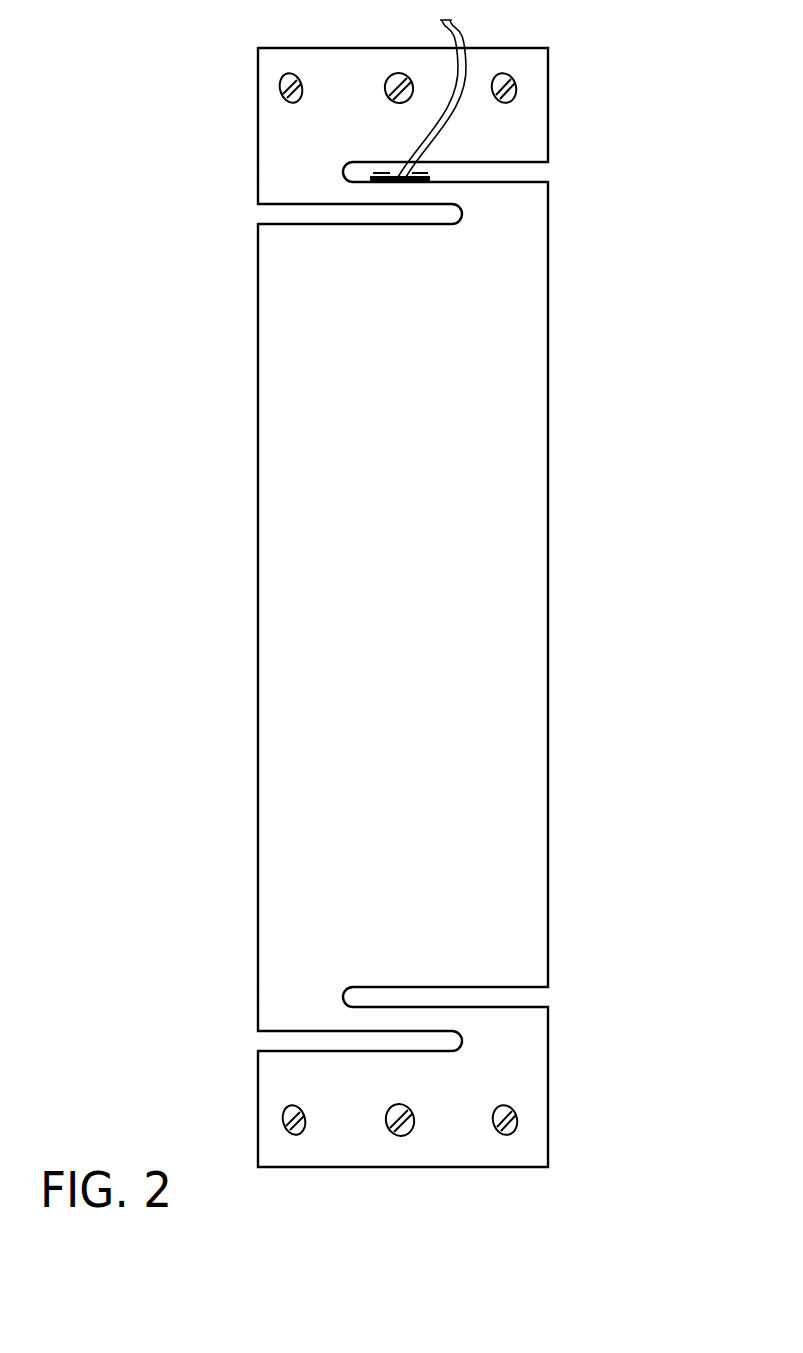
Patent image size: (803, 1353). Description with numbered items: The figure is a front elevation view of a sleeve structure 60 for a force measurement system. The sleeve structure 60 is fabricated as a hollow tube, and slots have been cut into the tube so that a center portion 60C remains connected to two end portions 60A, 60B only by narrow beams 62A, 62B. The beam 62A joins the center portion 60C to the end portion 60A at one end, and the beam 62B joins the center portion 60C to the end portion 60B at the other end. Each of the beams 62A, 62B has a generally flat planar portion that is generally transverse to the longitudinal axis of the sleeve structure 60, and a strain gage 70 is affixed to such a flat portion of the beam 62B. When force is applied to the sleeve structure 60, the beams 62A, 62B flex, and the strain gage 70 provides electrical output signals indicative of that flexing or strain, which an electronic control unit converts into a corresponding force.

The sleeve structure 60 is at (245, 458).
The end portion 60A is at (535, 1113).
The end portion 60B is at (532, 103).
The center portion 60C is at (532, 704).
The beam 62A is at (368, 1018).
The beam 62B is at (373, 194).
The strain gage 70 is at (365, 173).